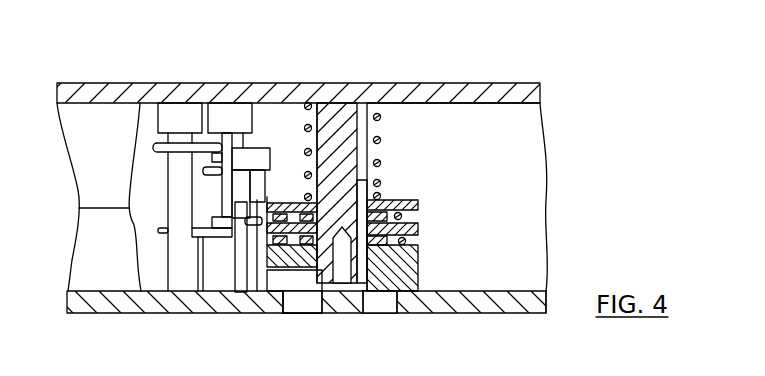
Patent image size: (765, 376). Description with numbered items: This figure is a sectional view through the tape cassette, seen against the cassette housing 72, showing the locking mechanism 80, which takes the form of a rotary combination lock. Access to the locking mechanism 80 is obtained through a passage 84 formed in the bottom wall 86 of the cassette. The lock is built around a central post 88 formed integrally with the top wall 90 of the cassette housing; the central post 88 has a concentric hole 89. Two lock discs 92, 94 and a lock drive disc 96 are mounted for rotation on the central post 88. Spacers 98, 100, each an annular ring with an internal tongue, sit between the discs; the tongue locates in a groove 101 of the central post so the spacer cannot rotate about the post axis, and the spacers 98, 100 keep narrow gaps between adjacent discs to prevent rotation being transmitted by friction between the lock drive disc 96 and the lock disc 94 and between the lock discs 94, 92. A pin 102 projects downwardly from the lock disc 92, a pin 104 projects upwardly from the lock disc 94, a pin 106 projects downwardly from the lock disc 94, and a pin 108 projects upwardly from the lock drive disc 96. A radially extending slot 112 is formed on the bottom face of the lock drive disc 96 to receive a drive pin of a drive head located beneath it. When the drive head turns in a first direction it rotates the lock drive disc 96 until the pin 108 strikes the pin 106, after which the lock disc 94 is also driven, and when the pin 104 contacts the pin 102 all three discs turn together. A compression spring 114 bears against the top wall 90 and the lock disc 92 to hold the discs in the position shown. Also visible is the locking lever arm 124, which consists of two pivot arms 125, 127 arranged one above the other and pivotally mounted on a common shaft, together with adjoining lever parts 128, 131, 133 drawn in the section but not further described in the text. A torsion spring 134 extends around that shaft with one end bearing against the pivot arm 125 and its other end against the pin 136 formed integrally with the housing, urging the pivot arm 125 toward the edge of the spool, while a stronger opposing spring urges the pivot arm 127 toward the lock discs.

The valve body 72 is at (89, 217).
The locking mechanism 80 is at (363, 75).
The passage 84 is at (292, 307).
The bottom wall 86 is at (163, 314).
The central post 88 is at (333, 105).
The concentric hole 89 is at (341, 272).
The top wall 90 is at (455, 83).
The lock disc 92 is at (420, 206).
The lock disc 94 is at (420, 229).
The lock drive disc 96 is at (407, 277).
The spacer 98 is at (395, 204).
The spacer 100 is at (392, 247).
The groove 101 is at (358, 272).
The pin 102 is at (402, 217).
The pin 104 is at (285, 210).
The pin 106 is at (280, 268).
The pin 108 is at (406, 242).
The radially extending slot 112 is at (306, 285).
The compression spring 114 is at (383, 138).
The locking lever arm 124 is at (156, 77).
The pivot arm 125 is at (237, 284).
The pivot arm 127 is at (228, 150).
The link 128 is at (264, 172).
The plate 131 is at (243, 195).
The flange 133 is at (218, 238).
The torsion spring 134 is at (200, 155).
The pin 136 is at (177, 248).